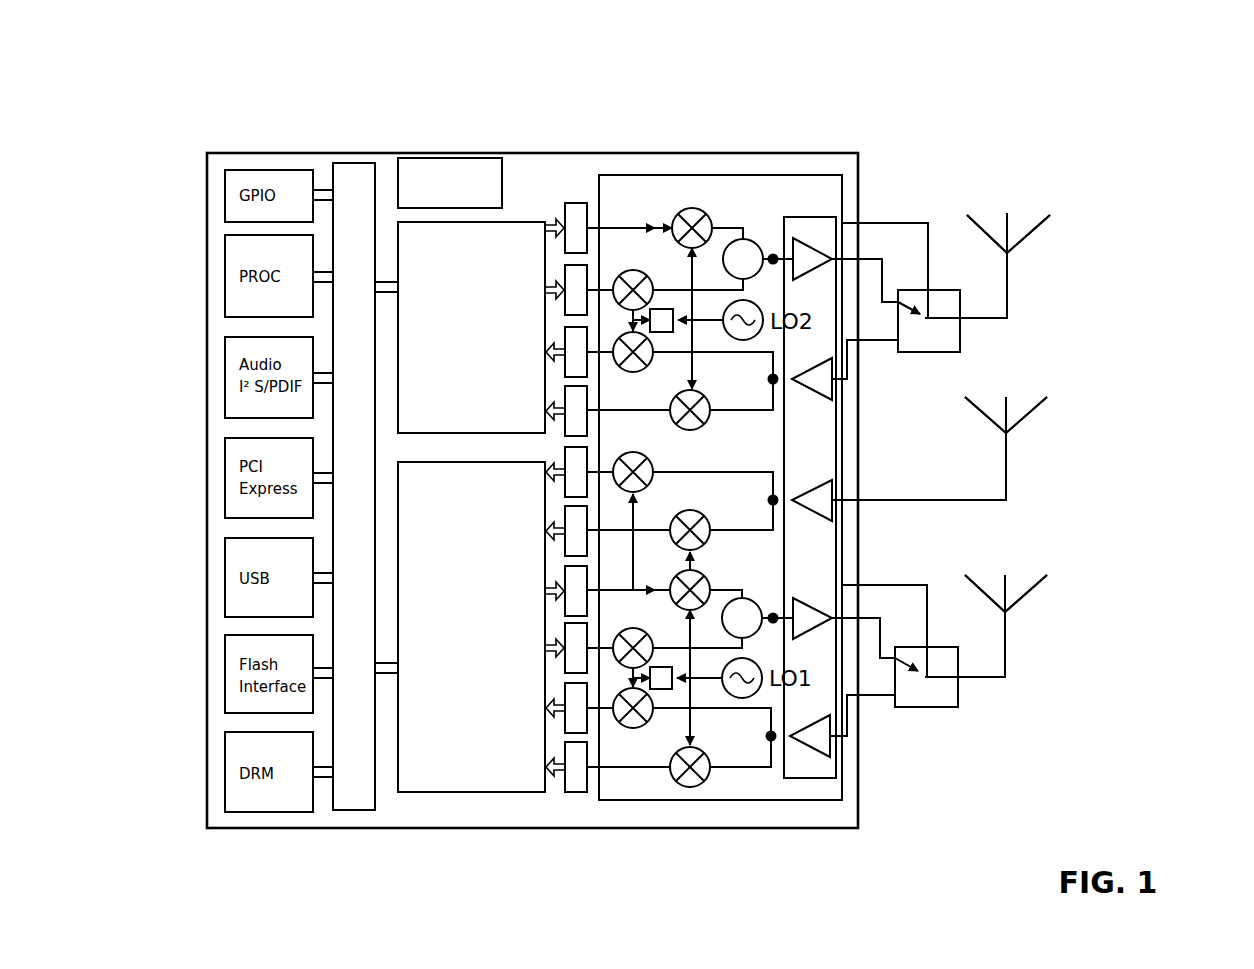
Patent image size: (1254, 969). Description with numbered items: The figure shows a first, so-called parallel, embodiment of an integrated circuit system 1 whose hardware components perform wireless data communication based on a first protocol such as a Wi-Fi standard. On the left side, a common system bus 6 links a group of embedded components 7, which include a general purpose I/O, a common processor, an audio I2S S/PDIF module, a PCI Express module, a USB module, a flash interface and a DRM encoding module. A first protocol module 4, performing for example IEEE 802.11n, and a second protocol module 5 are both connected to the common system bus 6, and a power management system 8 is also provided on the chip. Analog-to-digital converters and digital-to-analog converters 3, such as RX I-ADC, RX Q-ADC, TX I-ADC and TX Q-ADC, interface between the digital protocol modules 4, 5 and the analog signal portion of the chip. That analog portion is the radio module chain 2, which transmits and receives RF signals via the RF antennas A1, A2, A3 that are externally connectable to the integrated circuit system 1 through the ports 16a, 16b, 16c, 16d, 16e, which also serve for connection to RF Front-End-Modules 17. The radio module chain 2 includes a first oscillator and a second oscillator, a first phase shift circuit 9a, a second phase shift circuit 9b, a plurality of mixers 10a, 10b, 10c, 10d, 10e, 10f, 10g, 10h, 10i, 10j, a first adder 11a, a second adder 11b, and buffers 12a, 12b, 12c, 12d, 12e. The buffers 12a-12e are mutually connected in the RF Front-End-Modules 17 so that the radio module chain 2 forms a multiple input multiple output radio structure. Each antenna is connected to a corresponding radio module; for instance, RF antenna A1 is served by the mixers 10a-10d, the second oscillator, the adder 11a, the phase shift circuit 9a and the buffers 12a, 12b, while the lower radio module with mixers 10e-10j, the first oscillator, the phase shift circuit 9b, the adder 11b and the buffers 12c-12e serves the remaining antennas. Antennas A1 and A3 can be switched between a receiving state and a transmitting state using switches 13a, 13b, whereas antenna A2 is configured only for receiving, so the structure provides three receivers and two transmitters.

The integrated circuit system 1 is at (1210, 229).
The radio module chain 2 is at (720, 529).
The analog-to-digital converters and digital-to-analog converters 3 is at (566, 544).
The first protocol module 4 is at (455, 633).
The second protocol module 5 is at (455, 338).
The common system bus 6 is at (345, 518).
The embedded components 7 is at (532, 450).
The power management system 8 is at (447, 197).
The first phase shift circuit 9a is at (661, 309).
The second phase shift circuit 9b is at (661, 690).
The mixer 10a is at (702, 210).
The mixer 10b is at (621, 276).
The mixer 10c is at (626, 371).
The mixer 10d is at (710, 421).
The mixer 10e is at (631, 452).
The mixer 10f is at (703, 516).
The mixer 10g is at (706, 575).
The mixer 10h is at (627, 632).
The mixer 10i is at (627, 728).
The mixer 10j is at (694, 788).
The first adder 11a is at (753, 241).
The second adder 11b is at (758, 606).
The buffer 12a is at (811, 241).
The buffer 12b is at (838, 393).
The buffer 12c is at (812, 500).
The buffer 12d is at (831, 590).
The buffer 12e is at (836, 749).
The switch 13a is at (961, 338).
The switch 13b is at (946, 708).
The port 16a is at (778, 266).
The port 16b is at (780, 374).
The port 16c is at (780, 495).
The port 16d is at (779, 624).
The port 16e is at (780, 733).
The RF Front-End-Modules 17 is at (856, 533).
The RF antenna A1 is at (1010, 291).
The RF antenna A2 is at (1010, 472).
The RF antenna A3 is at (1010, 630).